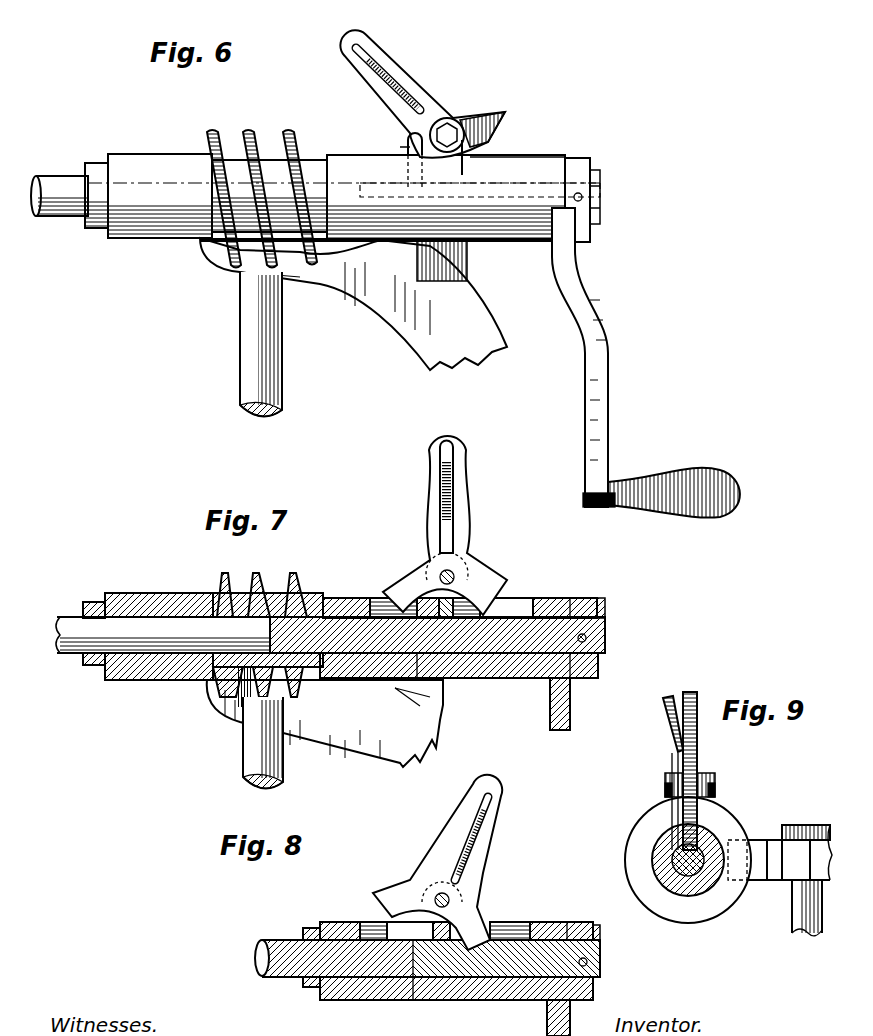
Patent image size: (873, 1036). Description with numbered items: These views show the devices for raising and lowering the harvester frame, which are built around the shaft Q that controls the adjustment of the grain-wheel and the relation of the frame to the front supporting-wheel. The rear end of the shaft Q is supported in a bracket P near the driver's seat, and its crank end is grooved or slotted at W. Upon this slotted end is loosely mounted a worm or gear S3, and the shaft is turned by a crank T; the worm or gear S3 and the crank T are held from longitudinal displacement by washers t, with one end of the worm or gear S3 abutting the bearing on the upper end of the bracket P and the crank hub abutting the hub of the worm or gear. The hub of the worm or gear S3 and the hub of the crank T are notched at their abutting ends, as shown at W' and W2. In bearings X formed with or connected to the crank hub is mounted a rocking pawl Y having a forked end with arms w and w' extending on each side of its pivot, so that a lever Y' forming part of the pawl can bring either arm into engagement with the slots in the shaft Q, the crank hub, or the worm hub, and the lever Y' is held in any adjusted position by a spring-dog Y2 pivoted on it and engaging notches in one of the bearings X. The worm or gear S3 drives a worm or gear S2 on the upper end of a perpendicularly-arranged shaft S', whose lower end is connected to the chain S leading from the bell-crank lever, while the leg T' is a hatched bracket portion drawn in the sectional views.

In FIG. 6, the shaft Q is at (62, 214).
In FIG. 7, the shaft Q is at (163, 635).
In FIG. 8, the shaft Q is at (292, 942).
In FIG. 6, the washers t is at (100, 170).
In FIG. 7, the washers t is at (90, 602).
In FIG. 8, the washers t is at (589, 920).
In FIG. 6, the bracket P is at (174, 163).
In FIG. 7, the bracket P is at (203, 680).
In FIG. 6, the worm or gear S3 is at (267, 187).
In FIG. 7, the worm or gear S3 is at (302, 578).
In FIG. 6, the perpendicularly-arranged shaft S' is at (270, 344).
In FIG. 7, the perpendicularly-arranged shaft S' is at (246, 742).
In FIG. 9, the perpendicularly-arranged shaft S' is at (789, 908).
In FIG. 9, the worm or gear S2 is at (777, 825).
In FIG. 9, the chain S is at (688, 860).
In FIG. 6, the crank T is at (646, 363).
In FIG. 7, the crank T is at (420, 693).
In FIG. 8, the crank T is at (531, 1018).
In FIG. 7, the bracket leg T' is at (574, 704).
In FIG. 7, the groove or slot W is at (464, 638).
In FIG. 8, the groove or slot W is at (475, 961).
In FIG. 6, the notch W' is at (384, 156).
In FIG. 7, the notch W' is at (385, 591).
In FIG. 8, the notch W' is at (355, 911).
In FIG. 6, the notch W2 is at (500, 157).
In FIG. 7, the notch W2 is at (518, 602).
In FIG. 8, the notch W2 is at (520, 930).
In FIG. 6, the arm w is at (397, 144).
In FIG. 7, the arm w is at (394, 578).
In FIG. 8, the arm w is at (408, 893).
In FIG. 6, the arm w' is at (494, 116).
In FIG. 7, the arm w' is at (485, 588).
In FIG. 8, the arm w' is at (510, 916).
In FIG. 6, the bearings X is at (444, 147).
In FIG. 9, the bearings X is at (672, 782).
In FIG. 6, the rocking pawl Y is at (422, 93).
In FIG. 7, the rocking pawl Y is at (445, 525).
In FIG. 8, the rocking pawl Y is at (437, 862).
In FIG. 6, the lever Y' is at (388, 63).
In FIG. 7, the lever Y' is at (466, 497).
In FIG. 8, the lever Y' is at (465, 819).
In FIG. 9, the lever Y' is at (699, 758).
In FIG. 6, the spring-dog Y2 is at (388, 82).
In FIG. 7, the spring-dog Y2 is at (448, 510).
In FIG. 8, the spring-dog Y2 is at (484, 808).
In FIG. 9, the spring-dog Y2 is at (675, 745).